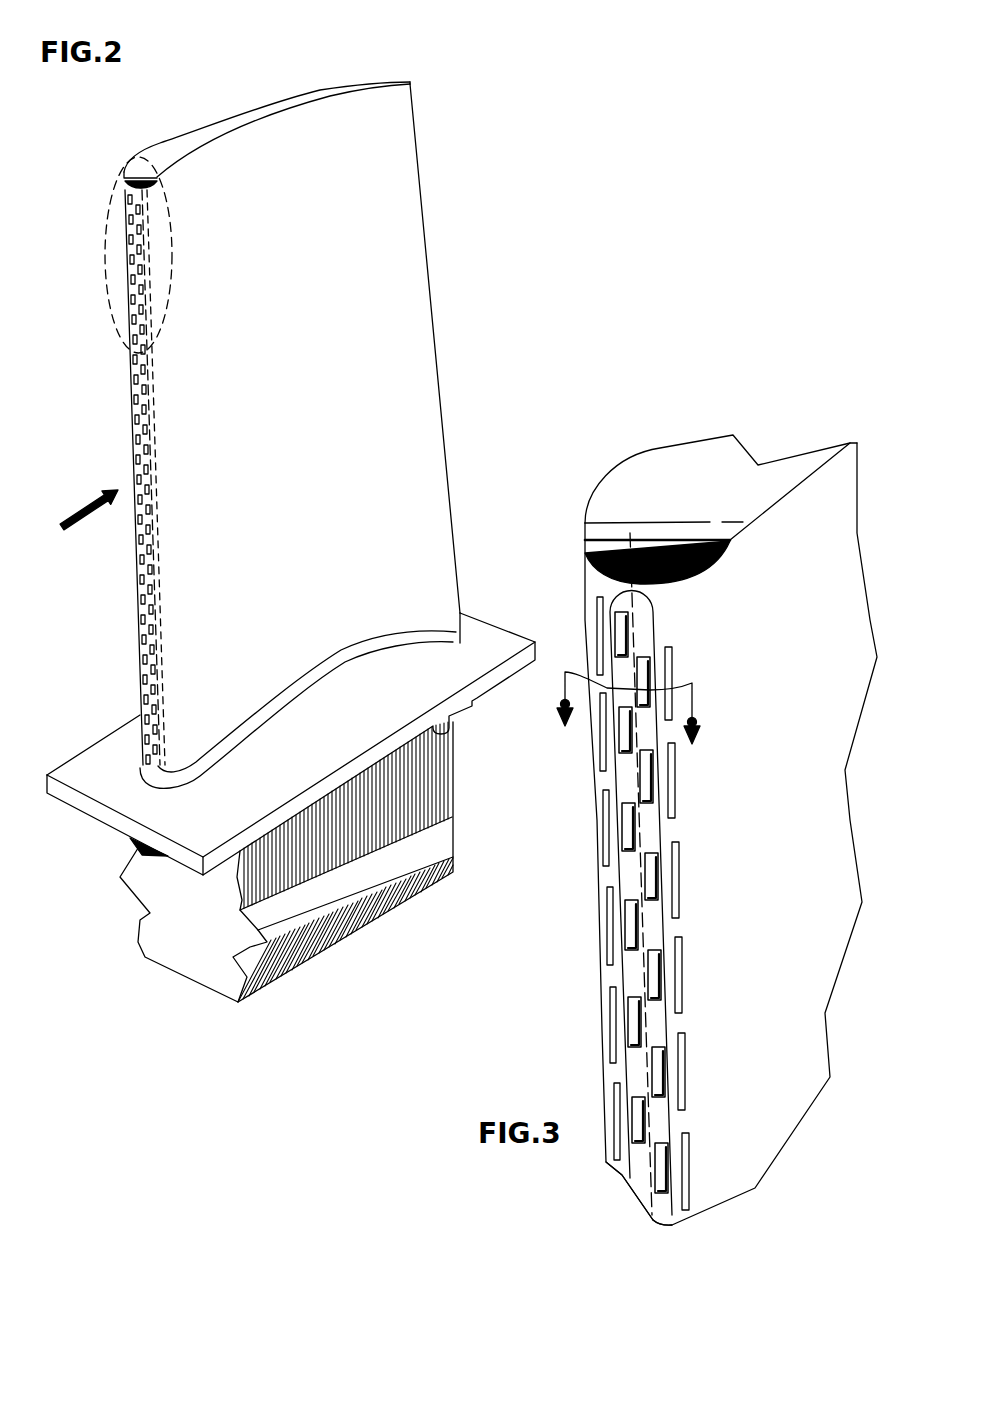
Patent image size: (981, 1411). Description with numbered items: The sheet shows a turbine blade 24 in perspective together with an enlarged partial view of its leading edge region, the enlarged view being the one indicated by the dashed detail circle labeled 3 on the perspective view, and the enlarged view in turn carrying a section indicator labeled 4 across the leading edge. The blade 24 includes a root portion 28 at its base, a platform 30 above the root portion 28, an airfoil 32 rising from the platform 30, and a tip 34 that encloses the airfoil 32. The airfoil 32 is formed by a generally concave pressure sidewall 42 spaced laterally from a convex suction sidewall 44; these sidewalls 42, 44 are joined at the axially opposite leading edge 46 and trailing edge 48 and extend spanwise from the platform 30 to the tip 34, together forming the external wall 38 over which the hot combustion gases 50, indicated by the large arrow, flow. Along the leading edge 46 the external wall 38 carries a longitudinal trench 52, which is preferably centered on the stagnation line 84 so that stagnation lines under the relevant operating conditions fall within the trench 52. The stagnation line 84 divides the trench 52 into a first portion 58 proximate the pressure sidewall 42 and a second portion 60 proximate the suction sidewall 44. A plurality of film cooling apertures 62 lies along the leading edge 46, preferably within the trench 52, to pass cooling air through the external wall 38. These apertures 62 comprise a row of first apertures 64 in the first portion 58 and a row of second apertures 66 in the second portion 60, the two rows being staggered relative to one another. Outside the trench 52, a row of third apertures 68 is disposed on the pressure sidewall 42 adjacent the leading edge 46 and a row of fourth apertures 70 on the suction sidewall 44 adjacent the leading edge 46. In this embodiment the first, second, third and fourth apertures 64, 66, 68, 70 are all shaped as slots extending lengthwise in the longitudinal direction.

In FIG. 2, the blade 24 is at (114, 128).
In FIG. 2, the root portion 28 is at (187, 938).
In FIG. 2, the platform 30 is at (128, 733).
In FIG. 2, the airfoil 32 is at (318, 410).
In FIG. 3, the airfoil 32 is at (820, 677).
In FIG. 2, the tip 34 is at (223, 123).
In FIG. 3, the tip 34 is at (623, 498).
In FIG. 2, the external wall 38 is at (416, 437).
In FIG. 2, the pressure sidewall 42 is at (305, 117).
In FIG. 3, the pressure sidewall 42 is at (850, 443).
In FIG. 2, the suction sidewall 44 is at (250, 100).
In FIG. 3, the suction sidewall 44 is at (640, 462).
In FIG. 2, the leading edge 46 is at (123, 193).
In FIG. 3, the leading edge 46 is at (592, 588).
In FIG. 2, the trailing edge 48 is at (412, 88).
In FIG. 2, the hot combustion gases 50 is at (85, 506).
In FIG. 3, the trench 52 is at (653, 620).
In FIG. 3, the first portion of the trench 58 is at (662, 1199).
In FIG. 3, the second portion of the trench 60 is at (637, 1163).
In FIG. 2, the film cooling apertures 62 is at (137, 452).
In FIG. 3, the first aperture 64 is at (653, 962).
In FIG. 3, the second aperture 66 is at (632, 930).
In FIG. 3, the third aperture 68 is at (677, 853).
In FIG. 3, the fourth aperture 70 is at (610, 903).
In FIG. 3, the stagnation line 84 is at (653, 1223).
In FIG. 2, the FIG. 3 detail region 3 is at (107, 257).
In FIG. 3, the section line 4- 4 is at (629, 727).